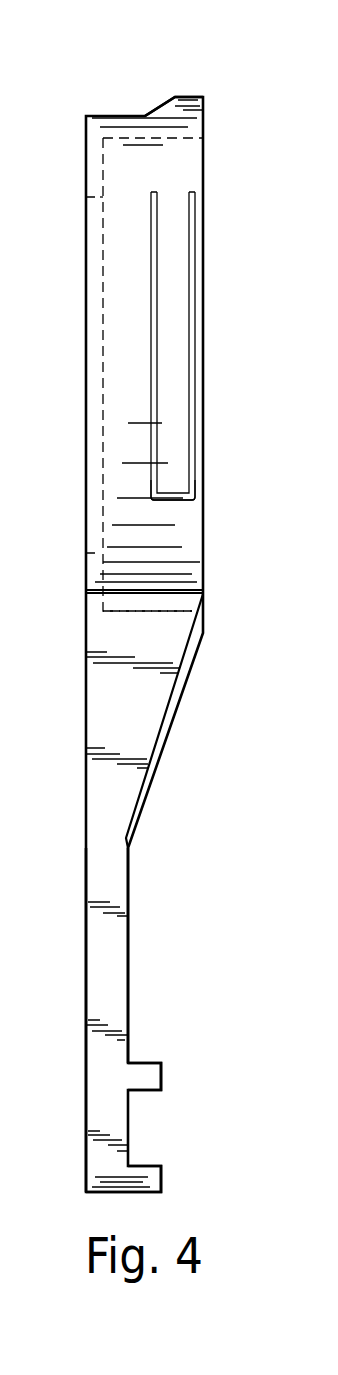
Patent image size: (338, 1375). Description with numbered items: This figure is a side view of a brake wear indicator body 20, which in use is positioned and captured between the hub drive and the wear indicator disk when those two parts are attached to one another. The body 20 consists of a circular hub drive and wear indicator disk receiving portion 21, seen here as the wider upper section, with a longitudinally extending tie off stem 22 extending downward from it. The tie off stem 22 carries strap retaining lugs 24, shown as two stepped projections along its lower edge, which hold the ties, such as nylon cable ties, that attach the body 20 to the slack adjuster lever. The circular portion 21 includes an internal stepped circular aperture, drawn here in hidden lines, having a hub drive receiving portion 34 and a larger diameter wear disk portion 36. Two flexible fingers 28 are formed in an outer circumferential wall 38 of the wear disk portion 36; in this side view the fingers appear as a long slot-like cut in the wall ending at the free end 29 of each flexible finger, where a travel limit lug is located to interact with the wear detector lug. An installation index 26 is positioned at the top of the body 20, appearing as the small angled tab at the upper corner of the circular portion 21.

The body 20 is at (137, 89).
The hub drive and wear indicator disk receiving portion 21 is at (213, 209).
The tie off stem 22 is at (112, 950).
The strap retaining lug 24 is at (148, 1076).
The installation index 26 is at (203, 103).
The flexible fingers 28 is at (175, 265).
The free end 29 is at (177, 486).
The hub drive receiving portion 34 is at (98, 553).
The wear disk portion 36 is at (146, 612).
The outer circumferential wall 38 is at (168, 158).